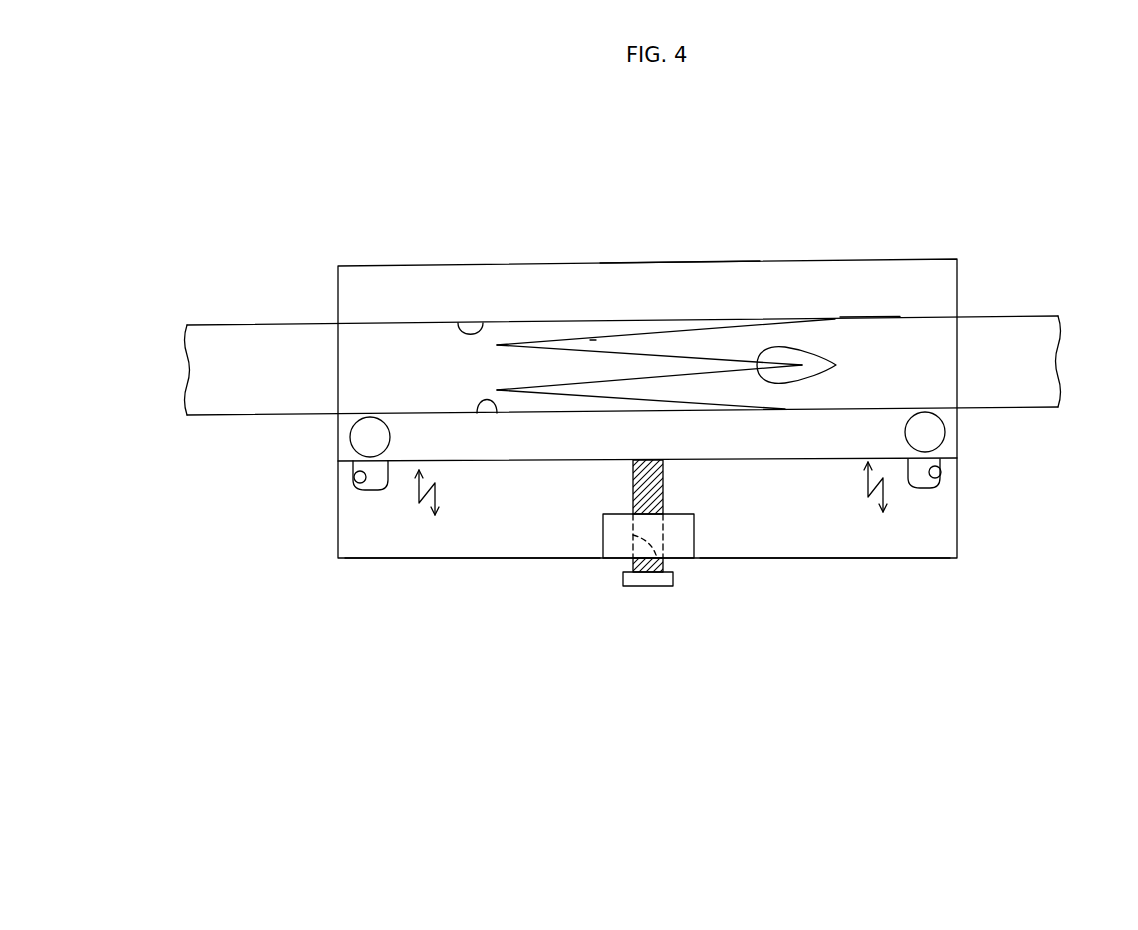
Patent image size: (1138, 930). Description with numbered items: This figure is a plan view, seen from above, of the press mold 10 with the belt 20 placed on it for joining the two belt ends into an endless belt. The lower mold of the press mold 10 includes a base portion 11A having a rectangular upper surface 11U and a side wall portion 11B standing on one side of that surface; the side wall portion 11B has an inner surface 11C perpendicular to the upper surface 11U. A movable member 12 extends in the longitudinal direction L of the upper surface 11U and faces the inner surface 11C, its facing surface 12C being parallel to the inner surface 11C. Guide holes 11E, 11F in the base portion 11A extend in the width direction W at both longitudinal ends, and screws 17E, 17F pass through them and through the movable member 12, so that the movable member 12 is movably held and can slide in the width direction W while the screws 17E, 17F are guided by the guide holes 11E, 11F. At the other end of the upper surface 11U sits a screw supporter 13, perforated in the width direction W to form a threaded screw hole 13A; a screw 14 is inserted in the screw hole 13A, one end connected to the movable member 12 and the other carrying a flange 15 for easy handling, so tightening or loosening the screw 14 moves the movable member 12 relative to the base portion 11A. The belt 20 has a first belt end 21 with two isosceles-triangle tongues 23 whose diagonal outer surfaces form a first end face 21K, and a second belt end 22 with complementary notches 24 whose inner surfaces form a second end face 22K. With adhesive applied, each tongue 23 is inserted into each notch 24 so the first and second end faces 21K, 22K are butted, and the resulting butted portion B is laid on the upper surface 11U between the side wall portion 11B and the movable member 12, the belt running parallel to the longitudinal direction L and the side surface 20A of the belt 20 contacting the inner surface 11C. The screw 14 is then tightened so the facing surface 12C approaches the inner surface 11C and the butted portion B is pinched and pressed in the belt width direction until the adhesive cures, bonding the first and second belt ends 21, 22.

The press mold 10 is at (955, 233).
The base portion 11A is at (383, 560).
The side wall portion 11B is at (685, 283).
The inner surface 11C is at (479, 322).
The guide hole 11E is at (356, 480).
The guide hole 11F is at (945, 478).
The upper surface 11U is at (853, 505).
The movable member 12 is at (897, 463).
The facing surface 12C is at (497, 413).
The screw supporter 13 is at (678, 538).
The screw hole 13A is at (658, 586).
The screw 14 is at (633, 482).
The flange 15 is at (643, 586).
The screw 17E is at (350, 437).
The screw 17F is at (945, 432).
The belt 20 is at (1005, 305).
The side surface 20A is at (853, 318).
The first belt end 21 is at (695, 320).
The first end face 21K is at (728, 326).
The second belt end 22 is at (700, 418).
The second end face 22K is at (725, 409).
The tongue 23 is at (593, 340).
The notch 24 is at (836, 365).
The butted portion B is at (648, 311).
The longitudinal direction L is at (715, 173).
The width direction W is at (1077, 458).